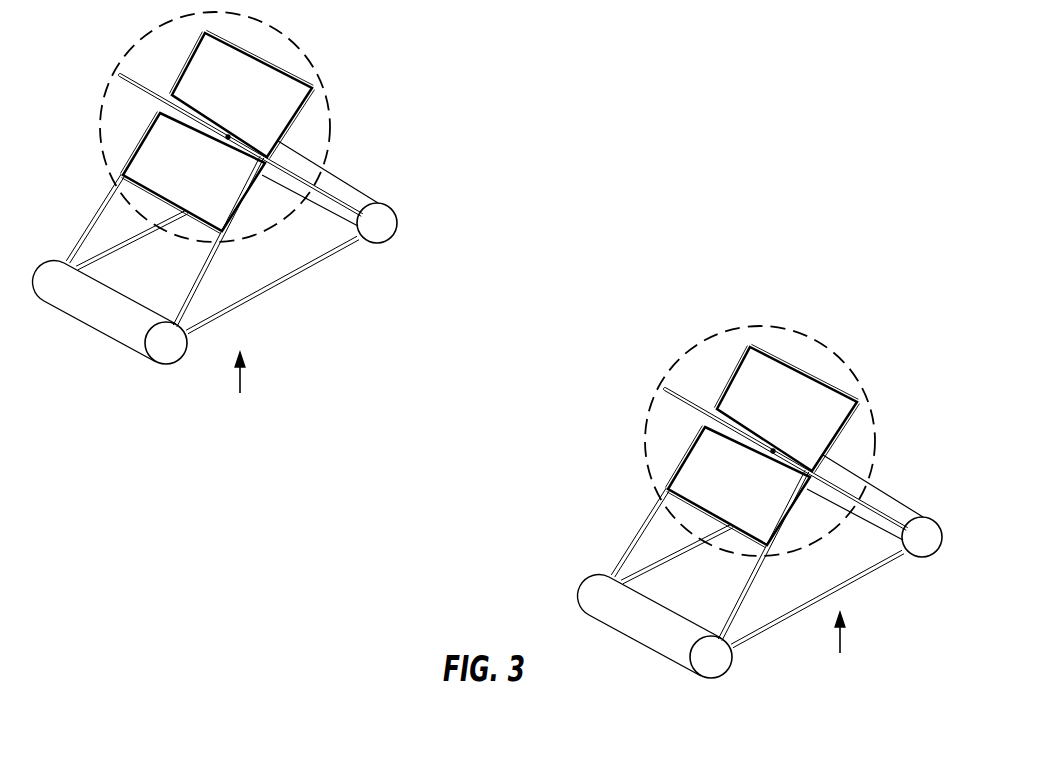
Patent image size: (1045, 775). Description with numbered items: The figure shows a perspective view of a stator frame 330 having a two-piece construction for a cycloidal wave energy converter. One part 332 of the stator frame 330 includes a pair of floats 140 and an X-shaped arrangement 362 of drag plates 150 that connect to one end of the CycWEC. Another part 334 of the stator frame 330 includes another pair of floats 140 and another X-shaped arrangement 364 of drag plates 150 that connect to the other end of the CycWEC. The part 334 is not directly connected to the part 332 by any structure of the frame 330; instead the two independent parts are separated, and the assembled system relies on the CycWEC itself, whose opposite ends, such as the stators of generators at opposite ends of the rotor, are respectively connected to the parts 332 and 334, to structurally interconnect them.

The float 140 is at (121, 322).
The drag plate 150 is at (251, 102).
The stator frame 330 is at (606, 123).
The part of stator frame 332 is at (240, 388).
The another part of stator frame 334 is at (841, 648).
The X-shaped arrangement of drag plates 362 is at (297, 45).
The another X-shaped arrangement of drag plates 364 is at (755, 326).